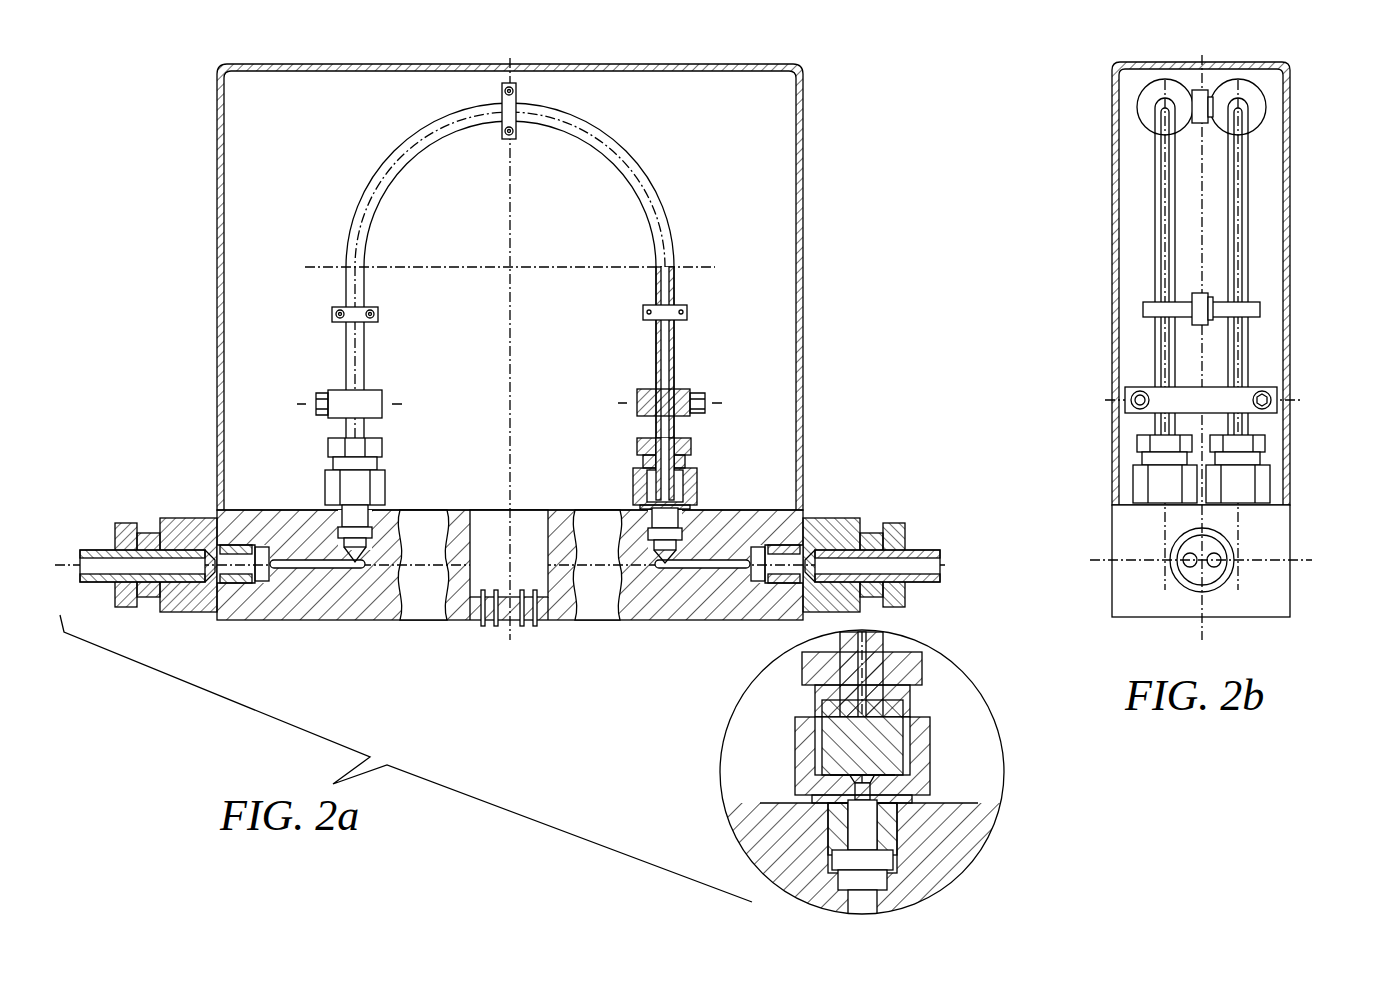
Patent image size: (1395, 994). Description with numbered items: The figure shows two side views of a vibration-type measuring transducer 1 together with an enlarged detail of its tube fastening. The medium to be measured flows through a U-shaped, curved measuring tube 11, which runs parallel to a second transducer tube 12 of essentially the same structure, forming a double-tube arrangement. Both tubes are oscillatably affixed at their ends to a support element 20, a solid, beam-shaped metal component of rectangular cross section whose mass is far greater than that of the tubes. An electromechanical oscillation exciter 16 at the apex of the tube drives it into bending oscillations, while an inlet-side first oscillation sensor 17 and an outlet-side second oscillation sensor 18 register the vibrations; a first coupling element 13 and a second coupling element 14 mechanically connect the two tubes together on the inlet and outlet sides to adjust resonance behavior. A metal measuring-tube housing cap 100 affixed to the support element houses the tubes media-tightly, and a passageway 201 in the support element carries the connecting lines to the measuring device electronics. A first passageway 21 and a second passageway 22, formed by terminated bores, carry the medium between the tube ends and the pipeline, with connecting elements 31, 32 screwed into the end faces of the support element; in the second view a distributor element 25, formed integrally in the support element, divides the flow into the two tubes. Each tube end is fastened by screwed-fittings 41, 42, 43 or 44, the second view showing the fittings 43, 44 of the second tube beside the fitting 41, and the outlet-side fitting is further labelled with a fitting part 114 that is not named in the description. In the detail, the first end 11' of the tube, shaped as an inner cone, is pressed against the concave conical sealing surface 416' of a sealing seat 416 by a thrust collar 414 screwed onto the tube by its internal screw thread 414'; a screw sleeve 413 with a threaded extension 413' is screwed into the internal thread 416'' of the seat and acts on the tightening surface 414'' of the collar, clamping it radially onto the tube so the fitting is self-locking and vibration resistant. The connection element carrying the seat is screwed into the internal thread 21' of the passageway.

In FIG. 2a, the measuring transducer 1 is at (822, 280).
In FIG. 2a, the measuring-tube housing cap 100 is at (803, 150).
In FIG. 2b, the measuring-tube housing cap 100 is at (1290, 153).
In FIG. 2a, the support element 20 is at (310, 622).
In FIG. 2b, the support element 20 is at (1284, 532).
In FIG. 2a, the passageway 201 is at (524, 506).
In FIG. 2a, the measuring tube 11 is at (660, 505).
In FIG. 2b, the measuring tube 11 is at (1130, 334).
In FIG. 2a, the first end of the measuring tube 11' is at (728, 623).
In FIG. 2b, the second transducer tube 12 is at (1243, 219).
In FIG. 2a, the first coupling element 13 is at (640, 402).
In FIG. 2b, the first coupling element 13 is at (1224, 398).
In FIG. 2a, the second coupling element 14 is at (378, 398).
In FIG. 2a, the oscillation exciter 16 is at (498, 142).
In FIG. 2b, the oscillation exciter 16 is at (1216, 88).
In FIG. 2a, the first oscillation sensor 17 is at (640, 313).
In FIG. 2b, the first oscillation sensor 17 is at (1216, 291).
In FIG. 2a, the second oscillation sensor 18 is at (385, 318).
In FIG. 2a, the first passageway 21 is at (750, 679).
In FIG. 2a, the internal thread 21' is at (777, 860).
In FIG. 2a, the second passageway 22 is at (300, 558).
In FIG. 2b, the distributor element 25 is at (1210, 596).
In FIG. 2a, the connecting element 31 is at (845, 505).
In FIG. 2a, the connecting element 32 is at (160, 505).
In FIG. 2a, the first screwed-fitting 41 is at (718, 430).
In FIG. 2b, the first screwed-fitting 41 is at (1140, 480).
In FIG. 2a, the second screwed-fitting 42 is at (325, 461).
In FIG. 2b, the screwed-fitting 43 is at (1258, 482).
In FIG. 2b, the screwed-fitting 44 is at (1272, 445).
In FIG. 2a, the fitting nut 114 is at (398, 471).
In FIG. 2a, the screw sleeve 413 is at (932, 675).
In FIG. 2a, the threaded extension 413' is at (781, 737).
In FIG. 2a, the thrust collar 414 is at (793, 760).
In FIG. 2a, the internal screw thread 414' is at (960, 740).
In FIG. 2a, the tightening surface 414'' is at (1007, 689).
In FIG. 2a, the sealing seat 416 is at (996, 784).
In FIG. 2a, the sealing surface 416' is at (733, 778).
In FIG. 2a, the internal thread 416'' is at (1007, 752).